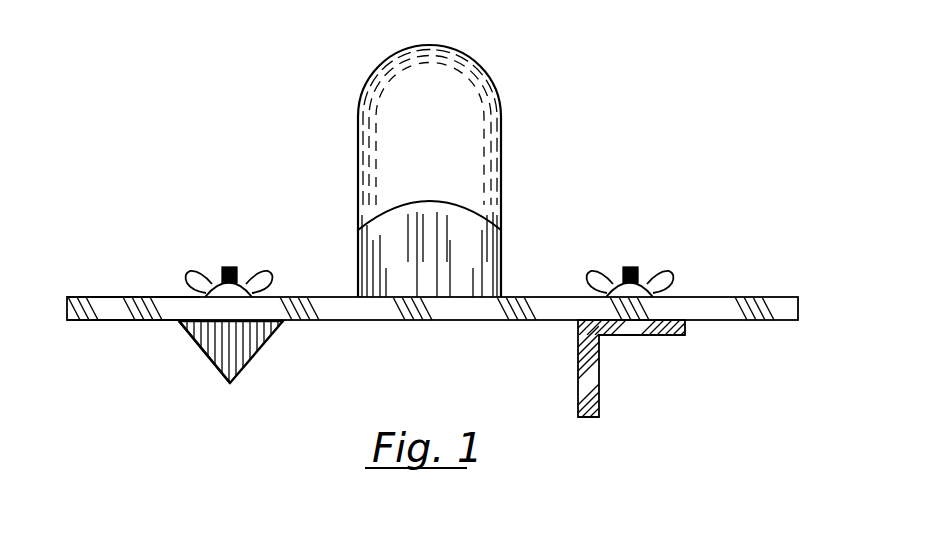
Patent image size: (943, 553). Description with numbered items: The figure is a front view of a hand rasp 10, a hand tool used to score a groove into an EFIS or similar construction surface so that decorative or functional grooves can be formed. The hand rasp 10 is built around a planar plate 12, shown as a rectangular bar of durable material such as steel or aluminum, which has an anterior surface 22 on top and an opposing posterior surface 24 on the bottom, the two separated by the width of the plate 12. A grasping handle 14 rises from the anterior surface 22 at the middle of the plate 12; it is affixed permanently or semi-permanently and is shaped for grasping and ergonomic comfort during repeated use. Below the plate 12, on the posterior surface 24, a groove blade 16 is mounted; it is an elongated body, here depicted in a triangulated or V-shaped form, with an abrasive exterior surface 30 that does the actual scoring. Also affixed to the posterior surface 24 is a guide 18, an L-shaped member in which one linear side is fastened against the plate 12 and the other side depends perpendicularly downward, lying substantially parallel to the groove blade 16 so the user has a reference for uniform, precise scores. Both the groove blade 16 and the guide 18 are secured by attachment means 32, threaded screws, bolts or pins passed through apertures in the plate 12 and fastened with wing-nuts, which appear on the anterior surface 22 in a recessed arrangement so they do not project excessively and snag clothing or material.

The hand rasp 10 is at (620, 45).
The planar plate 12 is at (769, 294).
The grasping handle 14 is at (506, 143).
The groove blade 16 is at (258, 336).
The guide 18 is at (600, 382).
The anterior surface 22 is at (85, 296).
The posterior surface 24 is at (85, 322).
The abrasive exterior surface 30 is at (198, 351).
The attachment means 32 is at (232, 266).